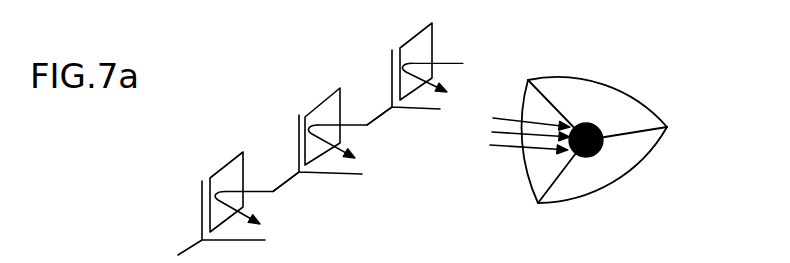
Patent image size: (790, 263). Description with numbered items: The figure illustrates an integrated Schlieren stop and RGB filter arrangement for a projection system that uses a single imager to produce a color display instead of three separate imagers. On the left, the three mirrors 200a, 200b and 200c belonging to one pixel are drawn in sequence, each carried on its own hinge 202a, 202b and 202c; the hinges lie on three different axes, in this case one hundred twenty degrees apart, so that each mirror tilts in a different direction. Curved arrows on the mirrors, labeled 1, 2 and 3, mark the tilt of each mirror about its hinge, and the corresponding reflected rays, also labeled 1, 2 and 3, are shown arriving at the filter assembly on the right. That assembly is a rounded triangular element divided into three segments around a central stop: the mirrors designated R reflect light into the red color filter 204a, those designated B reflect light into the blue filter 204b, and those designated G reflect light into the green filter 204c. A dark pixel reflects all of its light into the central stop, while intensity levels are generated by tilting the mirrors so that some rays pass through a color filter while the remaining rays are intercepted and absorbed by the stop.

The mirror 200a is at (224, 174).
The hinge 202a is at (220, 218).
The mirror 200b is at (340, 111).
The hinge 202b is at (322, 104).
The mirror 200c is at (428, 42).
The hinge 202c is at (400, 48).
The first beam / rotation direction 1 is at (391, 189).
The second beam / rotation direction 2 is at (439, 147).
The third beam / rotation direction 3 is at (486, 96).
The red color filter 204a is at (630, 155).
The blue filter 204b is at (603, 98).
The green filter 204c is at (543, 170).